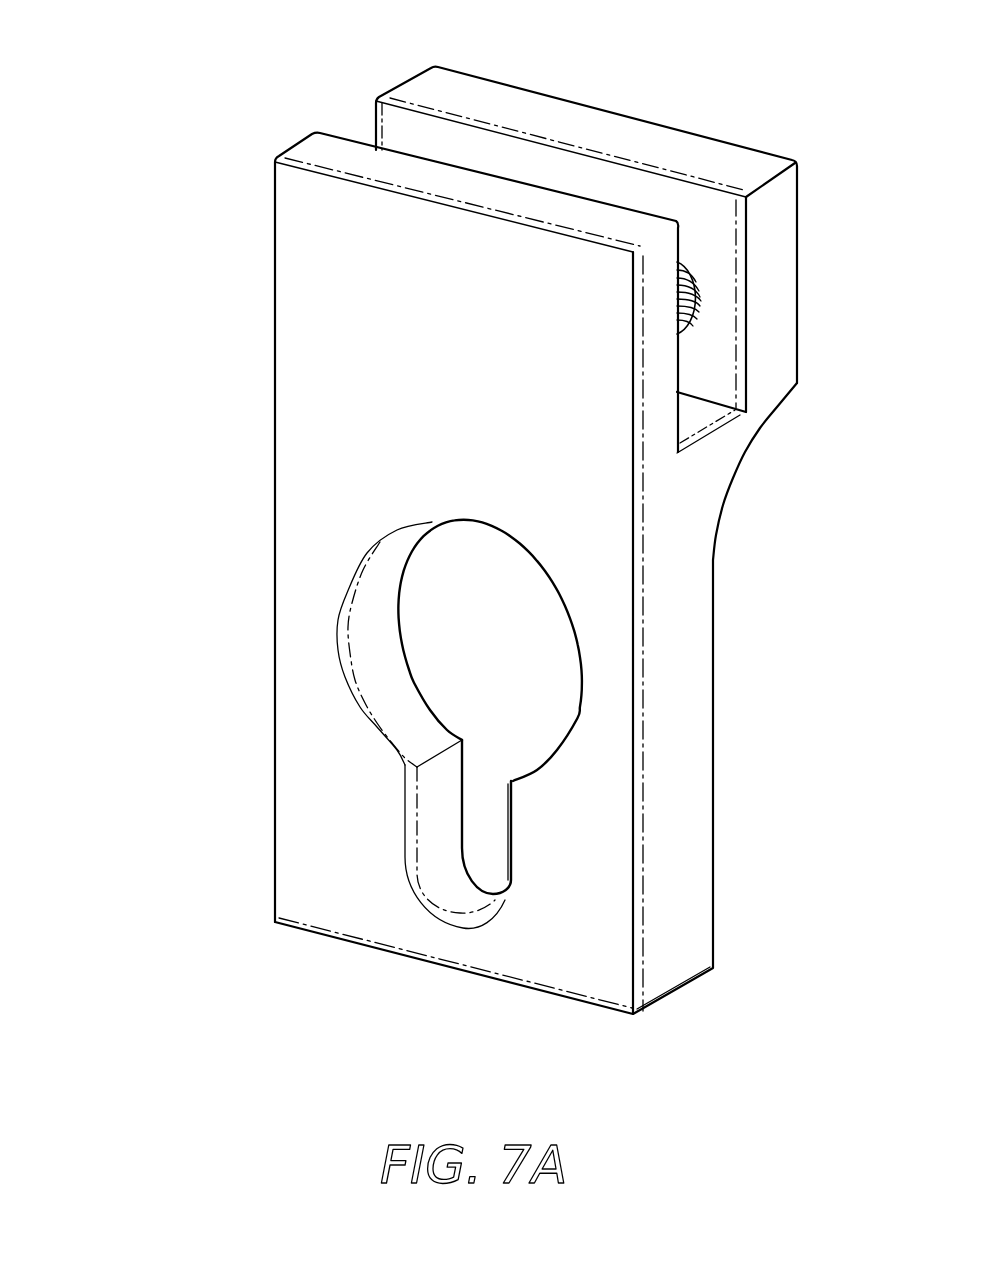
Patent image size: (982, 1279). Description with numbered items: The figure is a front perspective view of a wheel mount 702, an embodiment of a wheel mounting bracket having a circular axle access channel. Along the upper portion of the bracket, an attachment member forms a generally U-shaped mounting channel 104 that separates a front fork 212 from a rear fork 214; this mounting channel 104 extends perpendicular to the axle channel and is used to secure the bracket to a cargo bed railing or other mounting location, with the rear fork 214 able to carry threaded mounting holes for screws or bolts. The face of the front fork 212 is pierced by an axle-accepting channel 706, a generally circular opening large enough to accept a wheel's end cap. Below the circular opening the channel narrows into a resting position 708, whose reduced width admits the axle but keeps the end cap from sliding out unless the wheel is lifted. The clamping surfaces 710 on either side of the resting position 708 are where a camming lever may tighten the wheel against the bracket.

The wheel mount 702 is at (94, 229).
The front fork 212 is at (351, 158).
The rear fork 214 is at (539, 150).
The mounting channel 104 is at (708, 351).
The axle-accepting channel 706 is at (443, 619).
The resting position 708 is at (473, 876).
The clamping surfaces 710 is at (354, 854).